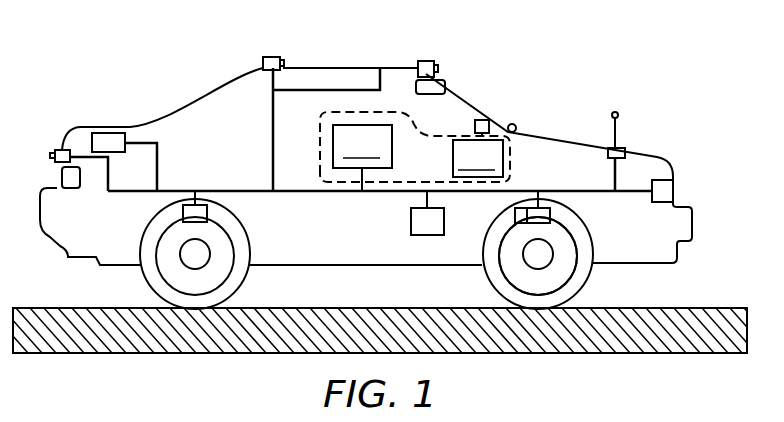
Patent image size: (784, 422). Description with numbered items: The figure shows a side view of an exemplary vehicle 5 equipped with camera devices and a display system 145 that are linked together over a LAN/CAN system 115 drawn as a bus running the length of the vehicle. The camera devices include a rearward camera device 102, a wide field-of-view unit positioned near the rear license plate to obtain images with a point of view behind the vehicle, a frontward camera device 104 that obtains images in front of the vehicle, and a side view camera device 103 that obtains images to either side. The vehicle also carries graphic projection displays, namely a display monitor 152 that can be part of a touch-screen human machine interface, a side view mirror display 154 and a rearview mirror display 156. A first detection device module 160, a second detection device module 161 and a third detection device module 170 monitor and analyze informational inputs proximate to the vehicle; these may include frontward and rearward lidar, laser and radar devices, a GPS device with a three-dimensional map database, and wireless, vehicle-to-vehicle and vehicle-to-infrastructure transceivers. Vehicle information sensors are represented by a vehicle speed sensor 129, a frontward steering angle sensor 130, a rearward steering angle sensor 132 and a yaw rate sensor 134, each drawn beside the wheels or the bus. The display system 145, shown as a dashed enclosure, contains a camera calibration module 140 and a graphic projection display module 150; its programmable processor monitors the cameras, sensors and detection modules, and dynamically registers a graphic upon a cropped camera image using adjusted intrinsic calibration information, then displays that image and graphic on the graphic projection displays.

The vehicle 5 is at (90, 88).
The rearward camera device 102 is at (62, 152).
The side view camera device 103 is at (262, 63).
The frontward camera device 104 is at (425, 61).
The LAN/CAN system 115 is at (173, 191).
The vehicle speed sensor 129 is at (505, 272).
The frontward steering angle sensor 130 is at (542, 218).
The rearward steering angle sensor 132 is at (207, 216).
The yaw rate sensor 134 is at (425, 222).
The camera calibration module 140 is at (362, 158).
The display system 145 is at (340, 111).
The graphic projection display module 150 is at (478, 158).
The display monitor 152 is at (491, 121).
The side view mirror display 154 is at (517, 128).
The rearview mirror display 156 is at (445, 84).
The first detection device module 160 is at (668, 188).
The second detection device module 161 is at (110, 133).
The third detection device module 170 is at (620, 128).